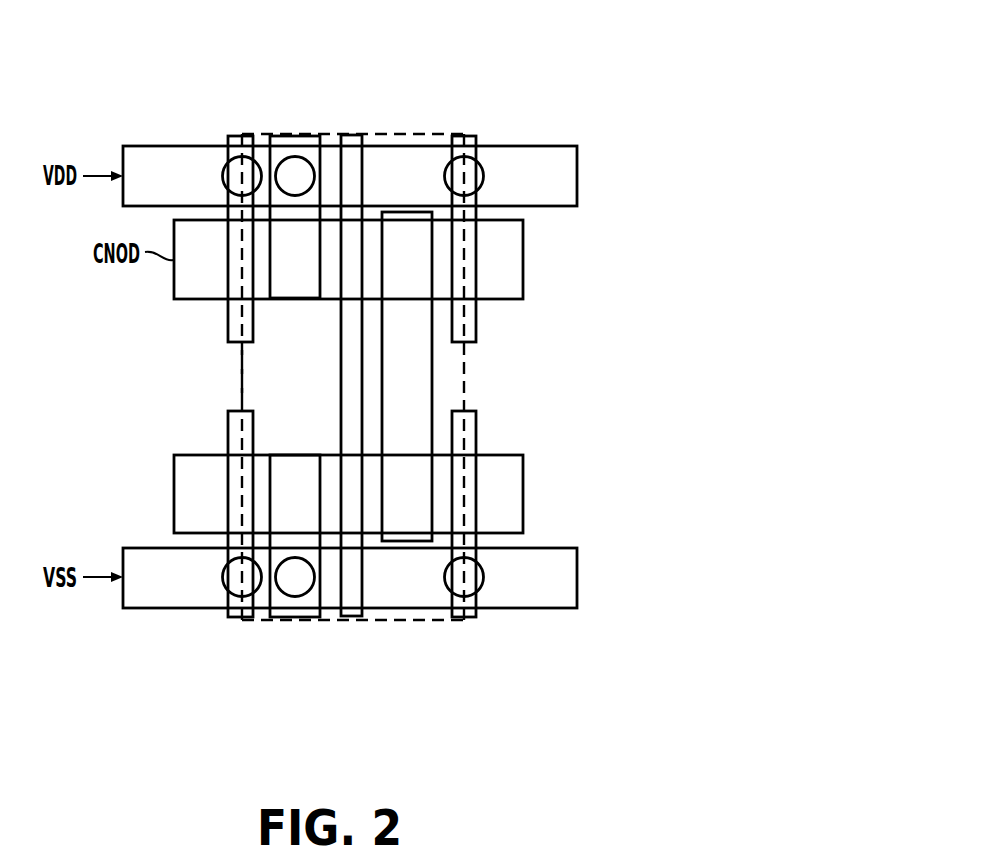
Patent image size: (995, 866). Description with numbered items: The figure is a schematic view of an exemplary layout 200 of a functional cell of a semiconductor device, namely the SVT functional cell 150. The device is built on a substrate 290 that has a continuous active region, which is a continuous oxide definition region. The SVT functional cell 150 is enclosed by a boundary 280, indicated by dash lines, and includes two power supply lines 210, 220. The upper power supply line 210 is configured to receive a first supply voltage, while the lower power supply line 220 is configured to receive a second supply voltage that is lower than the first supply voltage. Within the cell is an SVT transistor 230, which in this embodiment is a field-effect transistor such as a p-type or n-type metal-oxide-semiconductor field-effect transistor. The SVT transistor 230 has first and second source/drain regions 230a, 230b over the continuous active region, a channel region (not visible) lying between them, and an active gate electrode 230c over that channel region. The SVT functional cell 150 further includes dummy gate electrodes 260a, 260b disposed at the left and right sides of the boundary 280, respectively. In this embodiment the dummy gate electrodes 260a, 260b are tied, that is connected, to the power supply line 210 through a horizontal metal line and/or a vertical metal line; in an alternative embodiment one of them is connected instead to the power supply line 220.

The SVT functional cell 150 is at (330, 126).
The layout 200 is at (580, 719).
The power supply line 210 is at (168, 160).
The power supply line 220 is at (162, 593).
The SVT transistor 230 is at (467, 313).
The first source/drain region 230a is at (332, 300).
The second source/drain region 230b is at (372, 300).
The active gate electrode 230c is at (349, 420).
The dummy gate electrode 260a is at (236, 323).
The dummy gate electrode 260b is at (470, 315).
The boundary 280 is at (292, 622).
The substrate 290 is at (260, 374).